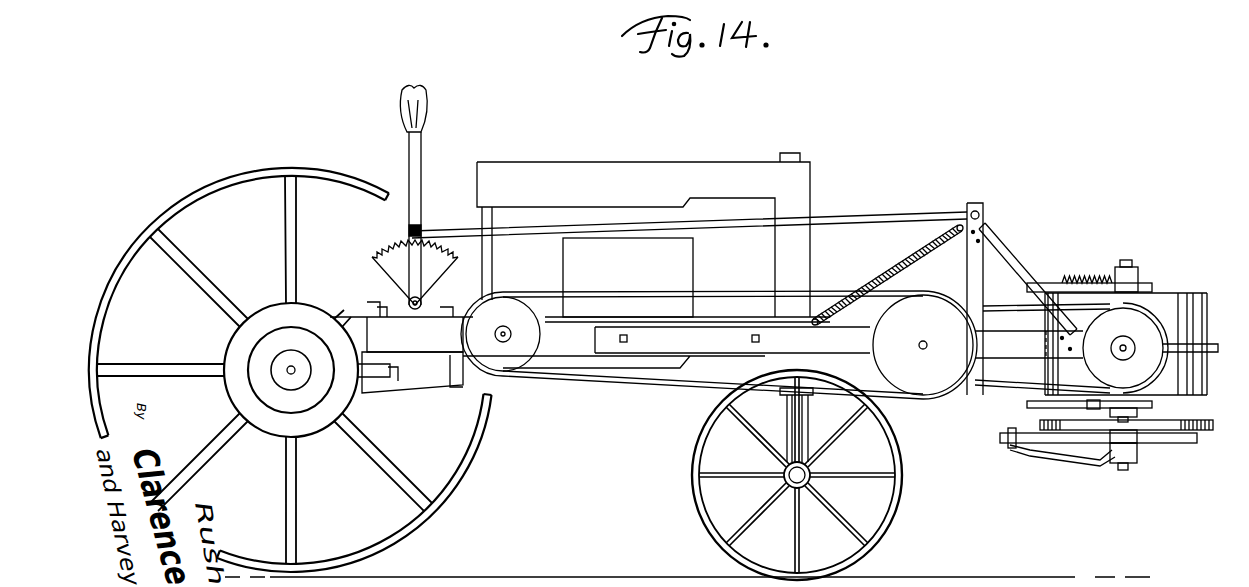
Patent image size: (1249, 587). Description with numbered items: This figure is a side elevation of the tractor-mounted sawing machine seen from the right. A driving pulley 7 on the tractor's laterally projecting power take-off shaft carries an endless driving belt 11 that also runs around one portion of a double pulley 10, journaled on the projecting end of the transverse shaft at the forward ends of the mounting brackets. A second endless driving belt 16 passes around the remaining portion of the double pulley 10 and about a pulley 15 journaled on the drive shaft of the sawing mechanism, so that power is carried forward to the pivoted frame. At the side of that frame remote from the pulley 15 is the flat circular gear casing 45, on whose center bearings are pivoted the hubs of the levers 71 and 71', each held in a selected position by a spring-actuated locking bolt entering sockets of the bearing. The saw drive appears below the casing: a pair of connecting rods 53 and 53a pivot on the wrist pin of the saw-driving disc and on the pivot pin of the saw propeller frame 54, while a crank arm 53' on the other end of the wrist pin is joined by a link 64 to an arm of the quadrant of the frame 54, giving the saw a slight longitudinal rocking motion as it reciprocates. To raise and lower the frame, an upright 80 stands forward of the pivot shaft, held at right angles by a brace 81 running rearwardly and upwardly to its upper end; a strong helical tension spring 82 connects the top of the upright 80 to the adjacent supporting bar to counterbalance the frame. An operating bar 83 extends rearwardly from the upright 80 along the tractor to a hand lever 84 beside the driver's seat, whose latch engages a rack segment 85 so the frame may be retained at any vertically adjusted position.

The hand lever 84 is at (425, 155).
The rack segment 85 is at (437, 268).
The operating bar 83 is at (858, 212).
The endless driving belt 11 is at (733, 287).
The driving pulley 7 is at (517, 352).
The double pulley 10 is at (927, 308).
The upright 80 is at (977, 248).
The brace 81 is at (1007, 250).
The helical tension spring 82 is at (898, 262).
The second endless driving belt 16 is at (977, 387).
The lever 71' is at (1089, 261).
The gear casing 45 is at (1185, 293).
The pulley 15 is at (1150, 333).
The lever 71 is at (1068, 411).
The connecting rod 53 is at (1126, 460).
The saw propeller frame 54 is at (1200, 443).
The connecting rod 53a is at (1138, 450).
The crank arm 53' is at (1147, 488).
The link 64 is at (1063, 457).